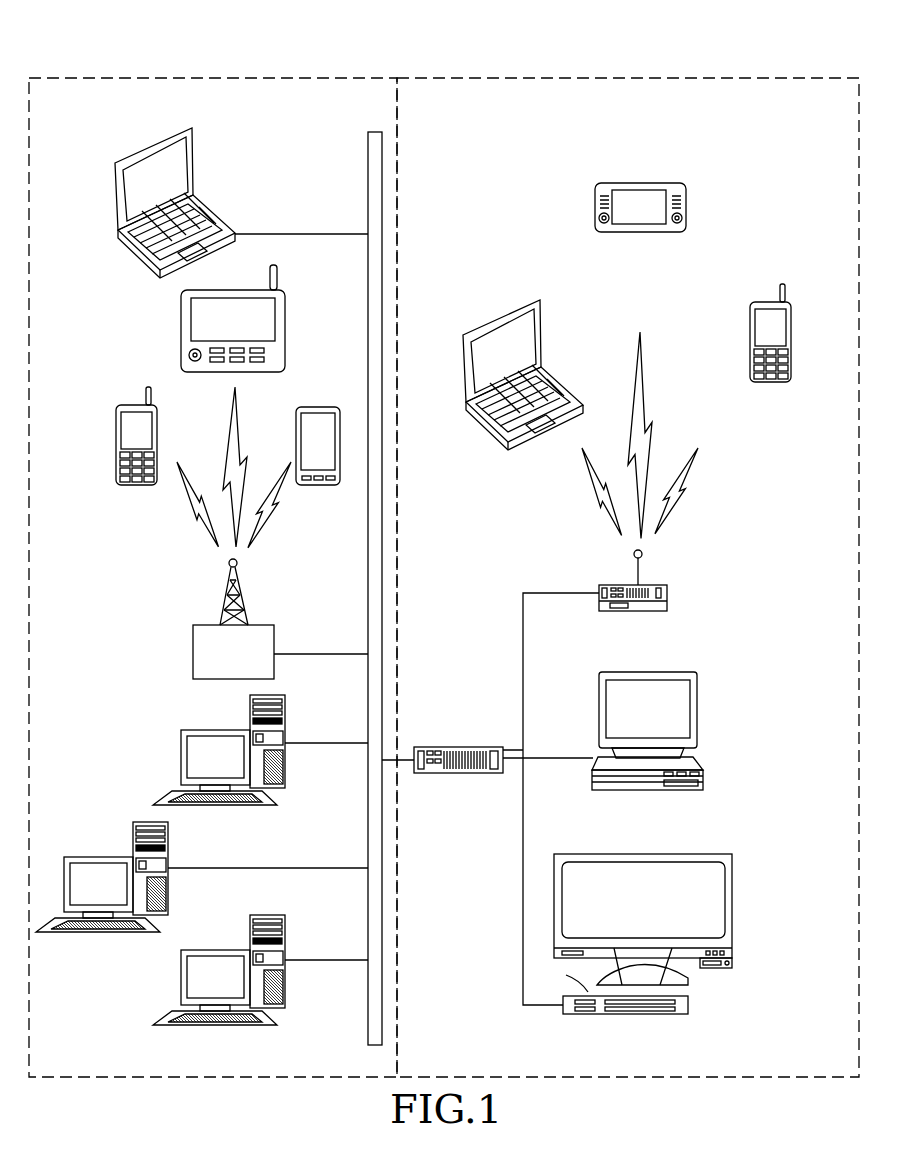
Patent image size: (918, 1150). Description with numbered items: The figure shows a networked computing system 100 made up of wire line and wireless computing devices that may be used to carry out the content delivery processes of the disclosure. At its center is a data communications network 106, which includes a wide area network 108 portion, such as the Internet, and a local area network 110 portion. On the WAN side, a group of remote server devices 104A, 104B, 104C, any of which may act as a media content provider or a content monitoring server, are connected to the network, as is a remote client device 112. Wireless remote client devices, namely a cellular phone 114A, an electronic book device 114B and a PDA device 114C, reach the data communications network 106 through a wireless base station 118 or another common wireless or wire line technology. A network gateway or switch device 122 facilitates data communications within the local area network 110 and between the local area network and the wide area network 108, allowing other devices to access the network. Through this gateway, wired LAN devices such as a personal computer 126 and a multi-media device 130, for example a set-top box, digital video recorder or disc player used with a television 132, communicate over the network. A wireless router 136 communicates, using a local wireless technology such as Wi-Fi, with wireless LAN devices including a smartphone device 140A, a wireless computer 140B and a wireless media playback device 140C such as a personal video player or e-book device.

The networked computing system 100 is at (173, 53).
The remote server device 104A is at (250, 708).
The remote server device 104B is at (135, 822).
The remote server device 104C is at (268, 915).
The data communications network 106 is at (368, 155).
The wide area network 108 is at (273, 78).
The local area network 110 is at (735, 78).
The remote client device 112 is at (160, 143).
The cellular phone 114A is at (113, 447).
The electronic book device 114B is at (181, 318).
The PDA device 114C is at (317, 407).
The wireless base station 118 is at (193, 660).
The network gateway or switch device 122 is at (465, 747).
The personal computer 126 is at (660, 672).
The multi-media device 130 is at (627, 1014).
The television 132 is at (733, 908).
The wireless router 136 is at (613, 585).
The smartphone device 140A is at (750, 342).
The wireless computer 140B is at (508, 312).
The wireless media playback device 140C is at (632, 183).